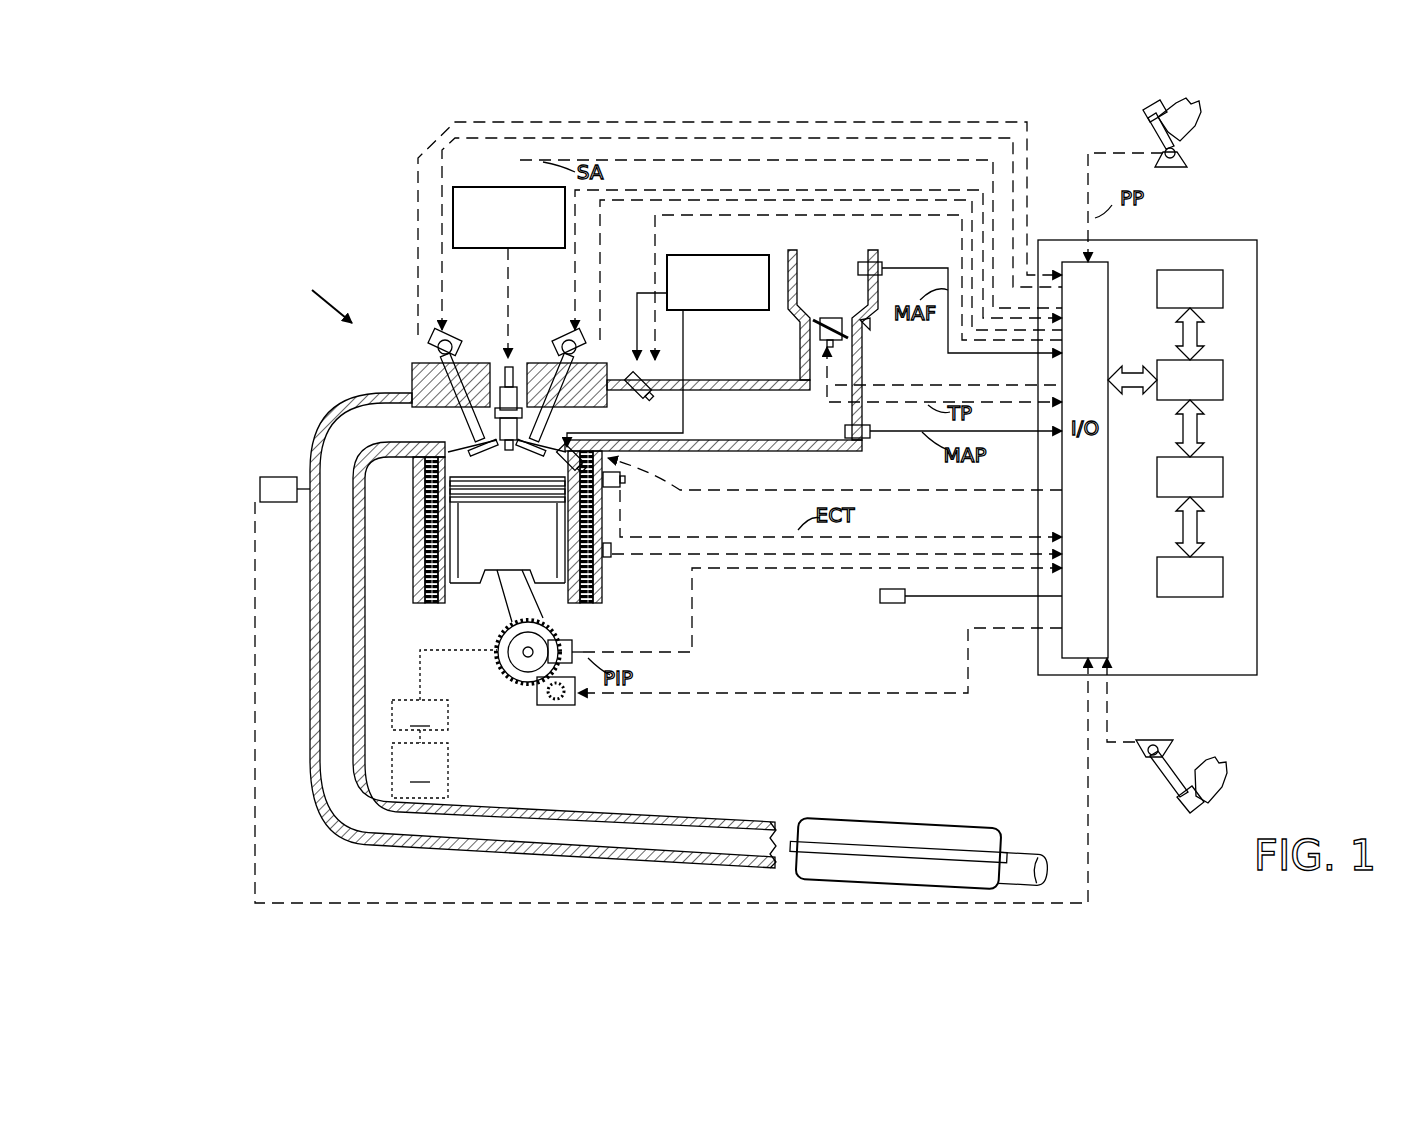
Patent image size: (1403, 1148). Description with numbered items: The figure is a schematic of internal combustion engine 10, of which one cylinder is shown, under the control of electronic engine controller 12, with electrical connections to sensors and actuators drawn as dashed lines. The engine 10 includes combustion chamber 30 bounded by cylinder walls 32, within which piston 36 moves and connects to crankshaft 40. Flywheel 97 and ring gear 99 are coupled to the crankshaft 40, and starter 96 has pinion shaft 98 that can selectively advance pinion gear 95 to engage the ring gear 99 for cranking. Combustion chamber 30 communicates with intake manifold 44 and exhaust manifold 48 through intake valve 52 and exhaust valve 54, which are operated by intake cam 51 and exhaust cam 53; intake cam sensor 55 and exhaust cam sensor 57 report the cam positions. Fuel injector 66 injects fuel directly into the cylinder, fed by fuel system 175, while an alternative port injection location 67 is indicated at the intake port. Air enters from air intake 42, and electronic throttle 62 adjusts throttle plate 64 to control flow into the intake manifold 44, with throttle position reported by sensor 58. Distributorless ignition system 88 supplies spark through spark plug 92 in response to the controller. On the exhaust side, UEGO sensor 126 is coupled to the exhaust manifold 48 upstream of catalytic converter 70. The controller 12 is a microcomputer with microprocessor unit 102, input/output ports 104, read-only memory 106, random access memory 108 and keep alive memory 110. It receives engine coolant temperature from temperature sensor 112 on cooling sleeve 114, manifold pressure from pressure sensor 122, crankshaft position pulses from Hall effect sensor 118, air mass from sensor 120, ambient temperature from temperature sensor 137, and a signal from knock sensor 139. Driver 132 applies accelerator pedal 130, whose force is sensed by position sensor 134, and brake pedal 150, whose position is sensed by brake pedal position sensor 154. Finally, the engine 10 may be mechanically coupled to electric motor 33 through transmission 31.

The internal combustion engine 10 is at (317, 298).
The electronic engine controller 12 is at (1250, 240).
The combustion chamber 30 is at (525, 541).
The transmission 31 is at (444, 690).
The cylinder walls 32 is at (453, 590).
The electric motor 33 is at (420, 764).
The piston 36 is at (491, 553).
The crankshaft 40 is at (502, 685).
The air intake 42 is at (819, 294).
The intake manifold 44 is at (756, 429).
The exhaust manifold 48 is at (370, 434).
The intake cam 51 is at (564, 336).
The intake valve 52 is at (548, 434).
The exhaust cam 53 is at (436, 342).
The exhaust valve 54 is at (462, 425).
The intake cam sensor 55 is at (578, 352).
The exhaust cam sensor 57 is at (436, 352).
The throttle position sensor 58 is at (820, 338).
The electronic throttle 62 is at (858, 325).
The throttle plate 64 is at (812, 322).
The fuel injector 66 is at (605, 463).
The port fuel injector 67 is at (634, 381).
The catalytic converter 70 is at (810, 822).
The distributorless ignition system 88 is at (467, 187).
The spark plug 92 is at (512, 366).
The pinion gear 95 is at (560, 704).
The starter 96 is at (572, 715).
The flywheel 97 is at (502, 655).
The pinion shaft 98 is at (545, 700).
The ring gear 99 is at (523, 692).
The microprocessor unit 102 is at (1223, 388).
The input/output ports 104 is at (1108, 272).
The read-only memory 106 is at (1223, 288).
The random access memory 108 is at (1223, 480).
The keep alive memory 110 is at (1223, 580).
The temperature sensor 112 is at (612, 488).
The cooling sleeve 114 is at (600, 578).
The Hall effect sensor 118 is at (572, 645).
The air mass sensor 120 is at (880, 262).
The pressure sensor 122 is at (870, 438).
The Universal Exhaust Gas Oxygen sensor 126 is at (260, 484).
The accelerator pedal 130 is at (1152, 130).
The driver 132 is at (1200, 115).
The position sensor 134 is at (1188, 155).
The temperature sensor 137 is at (904, 603).
The knock sensor 139 is at (613, 557).
The brake pedal 150 is at (1178, 797).
The brake pedal position sensor 154 is at (1142, 748).
The fuel system 175 is at (718, 255).